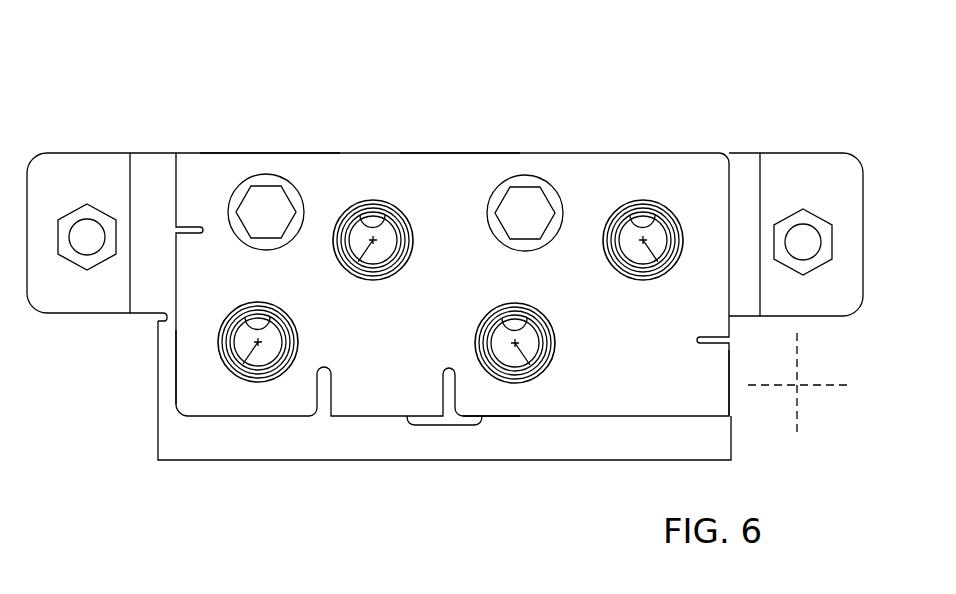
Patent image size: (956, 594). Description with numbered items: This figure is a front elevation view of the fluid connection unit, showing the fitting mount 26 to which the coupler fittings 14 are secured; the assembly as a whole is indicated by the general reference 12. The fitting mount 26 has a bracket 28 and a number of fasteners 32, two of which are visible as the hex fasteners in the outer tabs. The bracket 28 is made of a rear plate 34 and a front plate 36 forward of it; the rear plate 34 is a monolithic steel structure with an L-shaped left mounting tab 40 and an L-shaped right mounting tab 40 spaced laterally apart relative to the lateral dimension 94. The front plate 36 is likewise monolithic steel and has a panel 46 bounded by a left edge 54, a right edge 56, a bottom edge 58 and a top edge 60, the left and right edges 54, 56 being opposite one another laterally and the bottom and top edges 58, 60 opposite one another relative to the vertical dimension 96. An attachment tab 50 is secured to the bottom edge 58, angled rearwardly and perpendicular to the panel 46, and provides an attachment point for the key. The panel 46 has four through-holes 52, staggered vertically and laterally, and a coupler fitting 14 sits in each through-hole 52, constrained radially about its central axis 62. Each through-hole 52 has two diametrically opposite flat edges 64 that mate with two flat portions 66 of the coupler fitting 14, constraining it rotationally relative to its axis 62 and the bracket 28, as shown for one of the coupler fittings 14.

The electrical connector assembly 12 is at (164, 77).
The coupler fitting 14 is at (292, 314).
The fitting mount 26 is at (596, 78).
The bracket 28 is at (302, 165).
The fastener 32 is at (253, 203).
The rear plate 34 is at (285, 452).
The front plate 36 is at (425, 167).
The mounting tab 40 is at (88, 167).
The panel 46 is at (481, 167).
The attachment tab 50 is at (378, 418).
The through-hole 52 is at (384, 198).
The left edge 54 is at (733, 395).
The right edge 56 is at (175, 383).
The bottom edge 58 is at (494, 420).
The top edge 60 is at (273, 165).
The central axis 62 is at (393, 265).
The flat edge 64 is at (362, 270).
The flat portion 66 is at (338, 228).
The lateral dimension 94 is at (820, 383).
The vertical dimension 96 is at (800, 395).